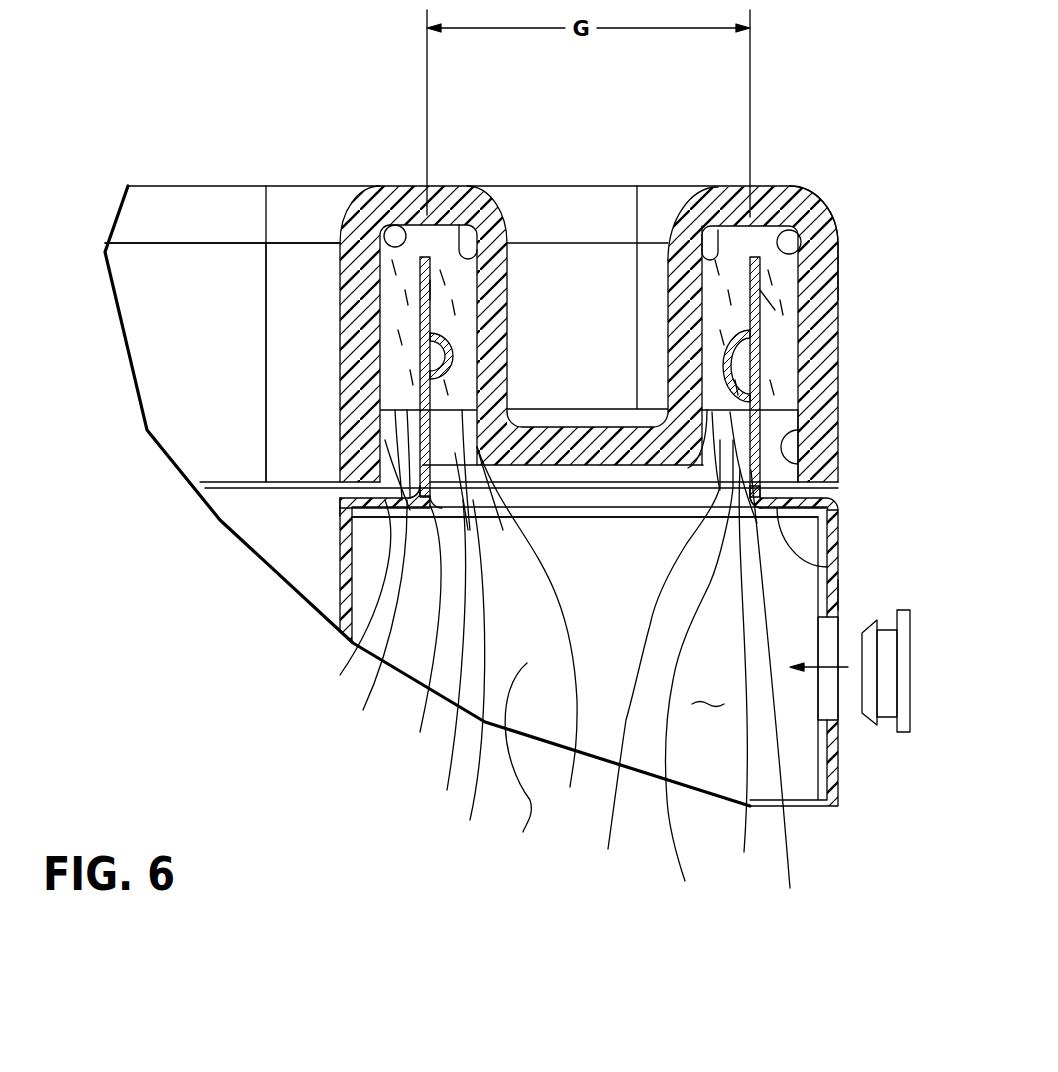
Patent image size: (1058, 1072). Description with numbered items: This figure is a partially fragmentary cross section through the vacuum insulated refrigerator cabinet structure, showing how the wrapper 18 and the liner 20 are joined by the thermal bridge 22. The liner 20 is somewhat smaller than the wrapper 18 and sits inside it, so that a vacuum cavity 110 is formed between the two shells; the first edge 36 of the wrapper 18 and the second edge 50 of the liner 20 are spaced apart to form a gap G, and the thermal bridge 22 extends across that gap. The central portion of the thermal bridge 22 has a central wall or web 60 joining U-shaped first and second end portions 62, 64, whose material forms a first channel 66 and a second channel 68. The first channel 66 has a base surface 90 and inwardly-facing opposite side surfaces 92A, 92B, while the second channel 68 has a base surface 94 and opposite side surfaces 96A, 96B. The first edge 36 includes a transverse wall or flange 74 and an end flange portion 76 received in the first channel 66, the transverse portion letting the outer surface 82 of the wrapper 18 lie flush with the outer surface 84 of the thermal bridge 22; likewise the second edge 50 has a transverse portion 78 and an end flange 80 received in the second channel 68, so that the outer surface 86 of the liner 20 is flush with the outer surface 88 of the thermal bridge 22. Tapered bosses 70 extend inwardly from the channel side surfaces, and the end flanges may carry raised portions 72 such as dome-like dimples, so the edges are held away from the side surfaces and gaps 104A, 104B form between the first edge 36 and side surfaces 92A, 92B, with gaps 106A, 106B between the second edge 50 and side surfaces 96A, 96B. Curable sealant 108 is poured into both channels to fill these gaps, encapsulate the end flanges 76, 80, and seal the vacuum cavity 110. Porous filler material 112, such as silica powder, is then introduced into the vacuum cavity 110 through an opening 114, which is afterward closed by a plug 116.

The wrapper 18 is at (841, 594).
The liner 20 is at (340, 572).
The thermal bridge 22 is at (838, 245).
The first edge 36 is at (760, 248).
The second edge 50 is at (432, 248).
The central wall or web 60 is at (585, 427).
The first end portion 62 is at (732, 187).
The second end portion 64 is at (415, 187).
The first channel 66 is at (739, 677).
The second channel 68 is at (438, 660).
The tapered boss 70 is at (793, 458).
The raised portion 72 is at (455, 345).
The transverse wall or flange 74 is at (838, 565).
The end flange portion 76 is at (768, 302).
The transverse portion 78 is at (352, 600).
The end flange 80 is at (455, 292).
The outer surface 82 is at (835, 542).
The outer surface 84 is at (835, 375).
The outer surface 86 is at (342, 545).
The outer surface 88 is at (340, 338).
The base surface 90 is at (720, 240).
The side surface 92A is at (705, 245).
The side surface 92B is at (783, 235).
The base surface 94 is at (388, 245).
The side surface 96A is at (385, 250).
The side surface 96B is at (466, 237).
The gap 104A is at (695, 681).
The gap 104B is at (787, 700).
The gap 106A is at (418, 635).
The gap 106B is at (541, 630).
The curable sealant 108 is at (395, 297).
The vacuum cavity 110 is at (585, 612).
The porous filler material 112 is at (519, 763).
The opening 114 is at (830, 705).
The plug 116 is at (900, 718).